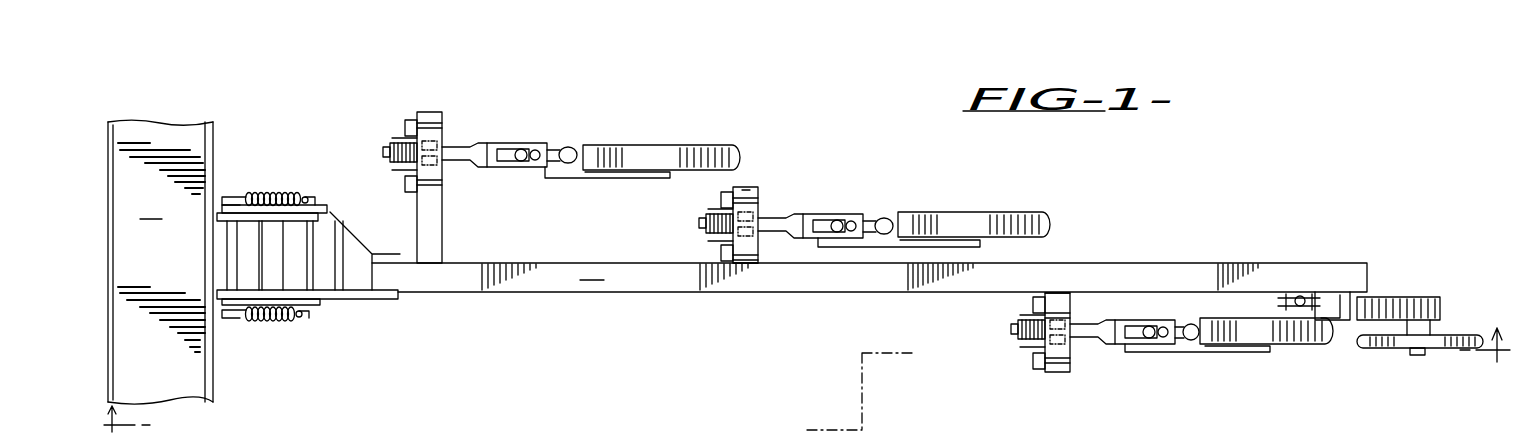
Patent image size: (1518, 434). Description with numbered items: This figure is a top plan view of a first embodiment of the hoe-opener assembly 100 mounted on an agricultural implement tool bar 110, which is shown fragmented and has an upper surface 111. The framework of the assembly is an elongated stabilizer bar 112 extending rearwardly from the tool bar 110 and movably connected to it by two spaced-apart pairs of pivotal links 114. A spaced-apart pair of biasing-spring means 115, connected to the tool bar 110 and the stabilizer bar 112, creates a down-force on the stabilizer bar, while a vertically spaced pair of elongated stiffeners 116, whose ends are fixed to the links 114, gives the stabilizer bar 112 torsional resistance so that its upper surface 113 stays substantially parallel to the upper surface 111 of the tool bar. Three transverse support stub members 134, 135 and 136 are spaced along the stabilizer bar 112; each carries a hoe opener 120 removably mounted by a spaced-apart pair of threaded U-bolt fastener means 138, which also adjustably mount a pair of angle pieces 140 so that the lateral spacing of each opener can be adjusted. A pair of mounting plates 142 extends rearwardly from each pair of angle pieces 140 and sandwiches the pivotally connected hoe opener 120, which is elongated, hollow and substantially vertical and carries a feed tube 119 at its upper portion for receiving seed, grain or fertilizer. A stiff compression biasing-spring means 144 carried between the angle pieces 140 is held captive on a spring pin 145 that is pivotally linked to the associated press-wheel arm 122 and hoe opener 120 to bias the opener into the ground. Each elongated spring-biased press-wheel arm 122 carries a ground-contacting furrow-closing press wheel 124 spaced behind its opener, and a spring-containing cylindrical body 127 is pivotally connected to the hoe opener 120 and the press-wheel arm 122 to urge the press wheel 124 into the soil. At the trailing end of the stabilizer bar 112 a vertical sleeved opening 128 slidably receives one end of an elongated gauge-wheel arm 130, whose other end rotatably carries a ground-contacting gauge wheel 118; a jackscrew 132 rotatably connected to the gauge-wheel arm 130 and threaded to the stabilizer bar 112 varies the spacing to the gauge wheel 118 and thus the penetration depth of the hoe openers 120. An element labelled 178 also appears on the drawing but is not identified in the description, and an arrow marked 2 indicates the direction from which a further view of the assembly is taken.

The hoe-opener assembly 100 is at (1158, 182).
The agricultural implement tool bar 110 is at (108, 122).
The upper surface of tool bar 111 is at (151, 206).
The stabilizer bar 112 is at (582, 294).
The upper surface of stabilizer bar 113 is at (592, 268).
The links 114 is at (302, 228).
The biasing-spring means 115 is at (282, 194).
The stiffeners 116 is at (262, 236).
The gauge wheel 118 is at (1445, 350).
The feed tube 119 is at (525, 162).
The hoe opener 120 is at (517, 150).
The press-wheel arm 122 is at (560, 180).
The press wheel 124 is at (665, 148).
The cylindrical body 127 is at (568, 148).
The sleeved opening 128 is at (1340, 330).
The gauge-wheel arm 130 is at (1408, 300).
The jackscrew 132 is at (1300, 296).
The stub member 134 is at (420, 246).
The stub member 135 is at (760, 200).
The stub member 136 is at (1055, 372).
The U-bolt fastener means 138 is at (444, 124).
The angle pieces 140 is at (408, 124).
The mounting plates 142 is at (466, 146).
The biasing-spring means 144 is at (396, 147).
The spring pin 145 is at (388, 153).
The post 178 is at (758, 192).
The section line 2 is at (1485, 353).